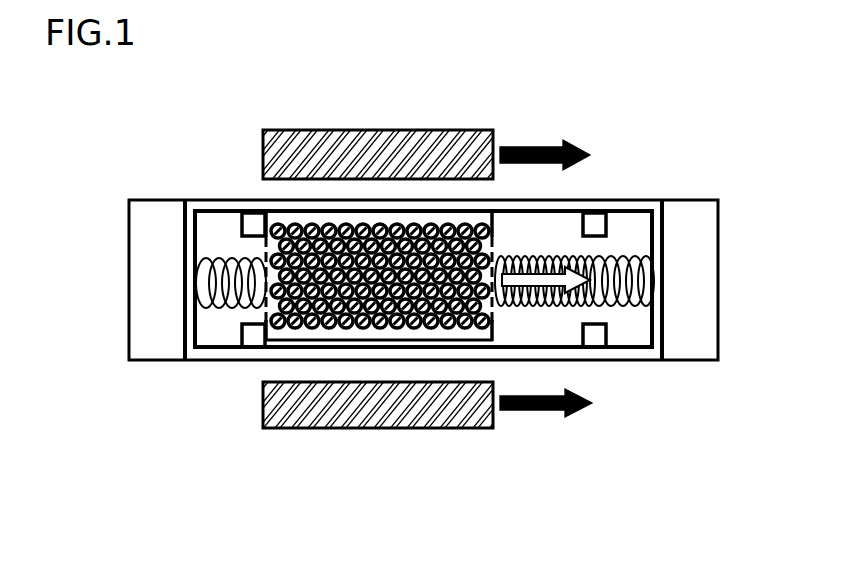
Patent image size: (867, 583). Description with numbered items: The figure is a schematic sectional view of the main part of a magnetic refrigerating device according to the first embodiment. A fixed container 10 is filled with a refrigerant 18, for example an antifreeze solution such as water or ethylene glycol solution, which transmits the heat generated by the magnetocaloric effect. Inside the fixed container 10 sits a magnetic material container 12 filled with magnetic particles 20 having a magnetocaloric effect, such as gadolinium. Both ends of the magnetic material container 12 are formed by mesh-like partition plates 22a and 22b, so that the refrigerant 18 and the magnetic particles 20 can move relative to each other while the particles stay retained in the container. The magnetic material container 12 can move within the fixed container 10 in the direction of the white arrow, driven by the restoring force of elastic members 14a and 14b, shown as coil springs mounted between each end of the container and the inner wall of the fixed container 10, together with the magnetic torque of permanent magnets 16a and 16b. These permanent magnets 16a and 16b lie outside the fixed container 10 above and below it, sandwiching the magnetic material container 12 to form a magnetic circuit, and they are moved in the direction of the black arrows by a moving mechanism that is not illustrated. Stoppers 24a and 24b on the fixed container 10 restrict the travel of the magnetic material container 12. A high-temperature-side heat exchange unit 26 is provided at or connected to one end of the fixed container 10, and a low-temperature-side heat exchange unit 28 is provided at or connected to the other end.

The fixed container 10 is at (572, 198).
The magnetic material container 12 is at (285, 237).
The elastic member 14a is at (553, 305).
The elastic member 14b is at (213, 285).
The permanent magnet 16a is at (413, 143).
The permanent magnet 16b is at (417, 417).
The refrigerant 18 is at (213, 223).
The magnetic particles 20 is at (277, 218).
The partition plate 22a is at (494, 327).
The partition plate 22b is at (267, 312).
The stopper 24a is at (593, 220).
The stopper 24b is at (242, 230).
The high-temperature-side heat exchange unit 26 is at (702, 280).
The low-temperature-side heat exchange unit 28 is at (141, 283).